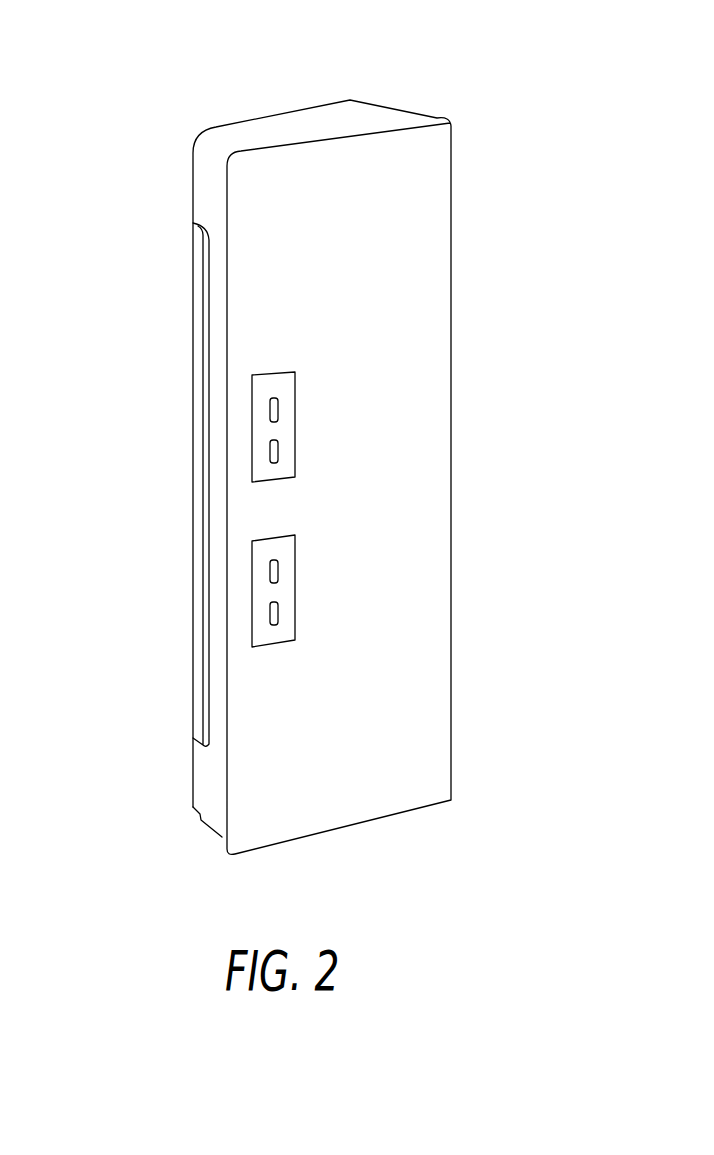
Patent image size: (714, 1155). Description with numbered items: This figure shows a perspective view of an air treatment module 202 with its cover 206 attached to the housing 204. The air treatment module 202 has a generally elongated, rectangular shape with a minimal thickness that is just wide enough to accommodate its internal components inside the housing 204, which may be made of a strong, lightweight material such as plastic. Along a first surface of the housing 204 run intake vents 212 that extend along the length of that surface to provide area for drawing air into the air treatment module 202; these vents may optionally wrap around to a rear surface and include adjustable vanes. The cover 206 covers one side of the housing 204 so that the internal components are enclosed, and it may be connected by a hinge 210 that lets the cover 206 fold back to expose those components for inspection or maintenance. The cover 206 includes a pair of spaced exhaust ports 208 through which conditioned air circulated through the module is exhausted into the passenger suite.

The air treatment module 202 is at (500, 142).
The housing 204 is at (317, 130).
The cover 206 is at (415, 417).
The exhaust ports 208 is at (270, 586).
The hinge 210 is at (433, 118).
The intake vents 212 is at (200, 272).